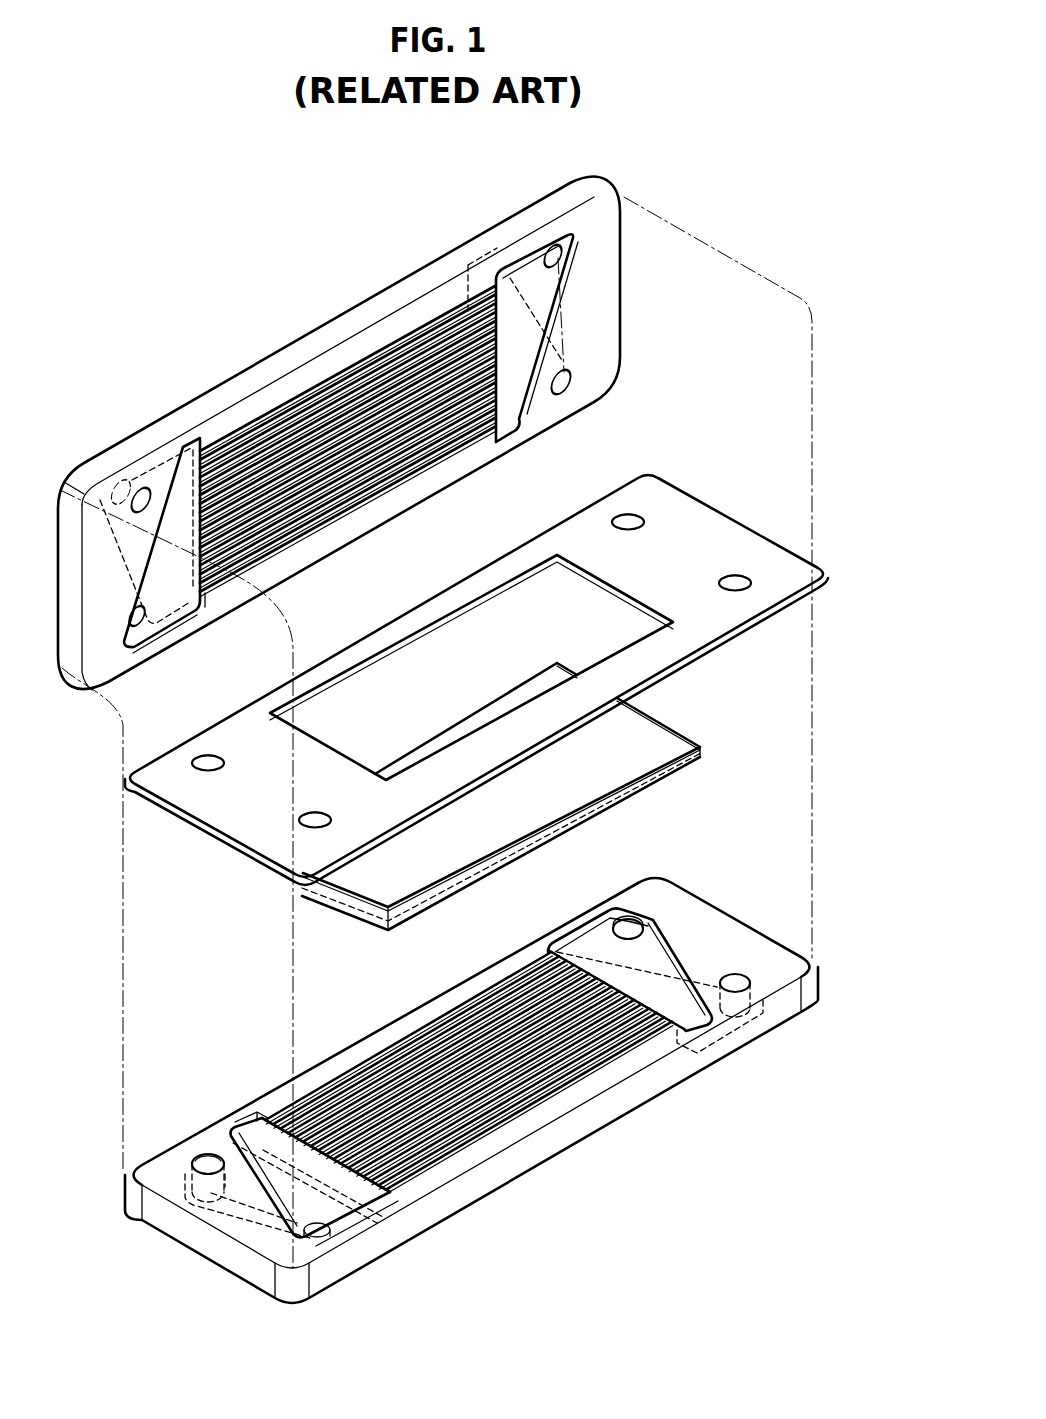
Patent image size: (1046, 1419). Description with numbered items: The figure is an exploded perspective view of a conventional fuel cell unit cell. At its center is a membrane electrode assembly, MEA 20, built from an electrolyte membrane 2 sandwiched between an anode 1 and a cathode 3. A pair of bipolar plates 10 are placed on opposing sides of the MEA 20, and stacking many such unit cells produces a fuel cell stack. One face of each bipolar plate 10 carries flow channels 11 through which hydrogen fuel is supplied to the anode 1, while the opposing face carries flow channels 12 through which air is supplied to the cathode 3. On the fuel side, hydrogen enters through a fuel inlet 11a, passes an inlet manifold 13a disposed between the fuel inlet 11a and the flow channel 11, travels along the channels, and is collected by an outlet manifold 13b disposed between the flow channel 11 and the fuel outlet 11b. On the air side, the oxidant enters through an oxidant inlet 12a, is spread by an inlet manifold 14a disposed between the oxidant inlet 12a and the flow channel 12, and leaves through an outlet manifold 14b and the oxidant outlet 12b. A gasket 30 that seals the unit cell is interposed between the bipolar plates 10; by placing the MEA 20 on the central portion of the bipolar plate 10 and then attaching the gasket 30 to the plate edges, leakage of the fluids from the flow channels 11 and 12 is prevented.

The bipolar plate 10 is at (438, 742).
The flow channel 12 is at (306, 407).
The oxidant inlet 12a is at (140, 622).
The oxidant outlet 12b is at (558, 256).
The inlet manifold 14a is at (151, 530).
The outlet manifold 14b is at (576, 304).
The gasket 30 is at (728, 501).
The membrane electrode assembly 20 is at (536, 796).
The anode 1 is at (658, 780).
The electrolyte membrane 2 is at (698, 754).
The cathode 3 is at (678, 744).
The flow channel 11 is at (555, 1075).
The fuel inlet 11a is at (325, 1234).
The fuel outlet 11b is at (628, 922).
The inlet manifold 13a is at (304, 1214).
The outlet manifold 13b is at (655, 945).